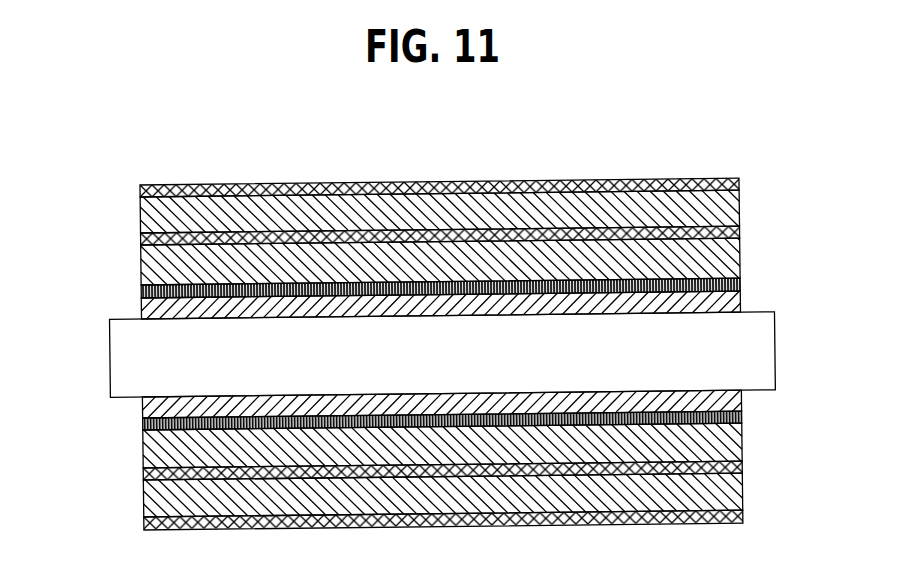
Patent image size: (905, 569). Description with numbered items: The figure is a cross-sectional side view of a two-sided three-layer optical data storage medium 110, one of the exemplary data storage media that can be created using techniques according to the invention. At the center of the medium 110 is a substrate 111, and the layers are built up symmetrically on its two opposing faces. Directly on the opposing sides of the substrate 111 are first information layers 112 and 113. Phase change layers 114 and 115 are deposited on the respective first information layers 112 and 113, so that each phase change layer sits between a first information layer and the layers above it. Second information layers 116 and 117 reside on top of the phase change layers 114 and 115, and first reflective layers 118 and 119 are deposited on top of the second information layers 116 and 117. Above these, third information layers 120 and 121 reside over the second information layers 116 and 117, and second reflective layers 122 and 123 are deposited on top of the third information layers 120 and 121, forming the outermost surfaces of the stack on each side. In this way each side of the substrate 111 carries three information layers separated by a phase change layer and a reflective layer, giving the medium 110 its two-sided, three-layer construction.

The two-sided three-layer optical data storage medium 110 is at (532, 168).
The substrate 111 is at (773, 330).
The first information layer 112 is at (740, 303).
The first information layer 113 is at (743, 398).
The phase change layer 114 is at (141, 290).
The phase change layer 115 is at (144, 420).
The second information layer 116 is at (740, 265).
The second information layer 117 is at (743, 440).
The first reflective layer 118 is at (141, 238).
The first reflective layer 119 is at (144, 470).
The third information layer 120 is at (740, 210).
The third information layer 121 is at (743, 490).
The second reflective layer 122 is at (141, 187).
The second reflective layer 123 is at (144, 518).